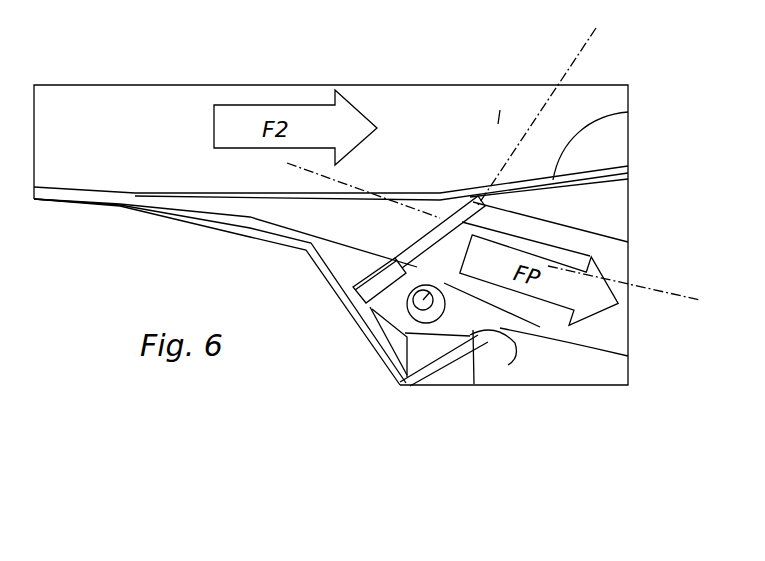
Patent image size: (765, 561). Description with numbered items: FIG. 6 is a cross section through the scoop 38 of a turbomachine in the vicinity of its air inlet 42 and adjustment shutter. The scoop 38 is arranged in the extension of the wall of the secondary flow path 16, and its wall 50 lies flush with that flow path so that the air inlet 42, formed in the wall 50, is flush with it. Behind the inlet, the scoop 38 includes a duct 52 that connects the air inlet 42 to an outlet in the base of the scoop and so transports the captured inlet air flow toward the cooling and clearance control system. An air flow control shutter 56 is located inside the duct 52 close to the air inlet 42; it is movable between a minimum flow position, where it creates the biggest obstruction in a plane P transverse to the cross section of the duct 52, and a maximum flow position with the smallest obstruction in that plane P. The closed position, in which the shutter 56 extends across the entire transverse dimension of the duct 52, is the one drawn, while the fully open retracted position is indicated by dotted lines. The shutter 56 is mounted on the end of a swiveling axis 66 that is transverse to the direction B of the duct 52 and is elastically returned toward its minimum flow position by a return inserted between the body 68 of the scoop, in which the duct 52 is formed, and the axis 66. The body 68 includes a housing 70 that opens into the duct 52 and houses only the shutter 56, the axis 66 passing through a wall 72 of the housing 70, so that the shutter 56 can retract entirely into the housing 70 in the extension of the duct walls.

The secondary flow path 16 is at (498, 124).
The scoop 38 is at (600, 206).
The air inlet 42 is at (438, 225).
The wall 50 is at (628, 112).
The duct 52 is at (602, 253).
The air flow control shutter 56 is at (438, 214).
The swiveling axis 66 is at (403, 386).
The body 68 is at (600, 370).
The housing 70 is at (483, 315).
The wall 72 is at (475, 383).
The plane P is at (600, 28).
The direction B is at (681, 301).